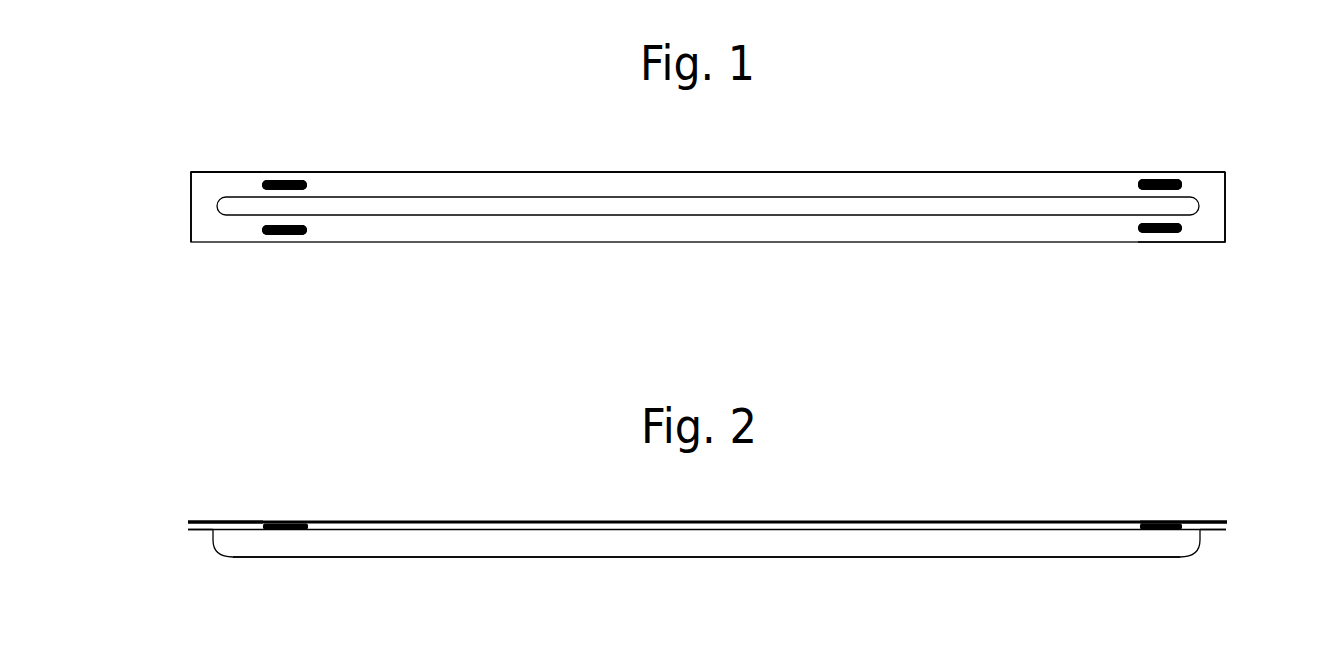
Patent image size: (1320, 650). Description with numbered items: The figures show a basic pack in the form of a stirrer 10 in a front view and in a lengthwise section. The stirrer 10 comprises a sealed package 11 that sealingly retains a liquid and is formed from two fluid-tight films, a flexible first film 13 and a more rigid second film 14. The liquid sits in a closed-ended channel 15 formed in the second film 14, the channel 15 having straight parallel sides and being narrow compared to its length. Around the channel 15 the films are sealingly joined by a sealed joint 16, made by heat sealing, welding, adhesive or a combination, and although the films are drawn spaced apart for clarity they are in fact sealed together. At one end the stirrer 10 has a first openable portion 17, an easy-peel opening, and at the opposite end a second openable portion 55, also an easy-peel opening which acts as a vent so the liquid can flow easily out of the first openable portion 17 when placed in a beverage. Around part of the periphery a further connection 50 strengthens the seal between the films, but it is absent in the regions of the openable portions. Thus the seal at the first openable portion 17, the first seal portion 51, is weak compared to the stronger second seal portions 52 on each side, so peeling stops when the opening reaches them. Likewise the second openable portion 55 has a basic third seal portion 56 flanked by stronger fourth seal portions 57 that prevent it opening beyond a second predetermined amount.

In FIG. 1, the stirrer 10 is at (874, 148).
In FIG. 1, the sealed package 11 is at (1015, 172).
In FIG. 2, the first film 13 is at (955, 522).
In FIG. 2, the second film 14 is at (1030, 557).
In FIG. 1, the channel 15 is at (590, 207).
In FIG. 2, the channel 15 is at (388, 555).
In FIG. 1, the sealed joint 16 is at (700, 182).
In FIG. 2, the sealed joint 16 is at (202, 531).
In FIG. 1, the first openable portion 17 is at (208, 255).
In FIG. 2, the first openable portion 17 is at (185, 497).
In FIG. 1, the further connection 50 is at (265, 157).
In FIG. 1, the first seal portion 51 is at (198, 205).
In FIG. 1, the second seal portions 52 is at (288, 182).
In FIG. 2, the second seal portions 52 is at (290, 522).
In FIG. 1, the second openable portion 55 is at (1207, 268).
In FIG. 2, the second openable portion 55 is at (1220, 495).
In FIG. 1, the third seal portion 56 is at (1218, 200).
In FIG. 1, the fourth seal portions 57 is at (1163, 180).
In FIG. 2, the fourth seal portions 57 is at (1152, 522).